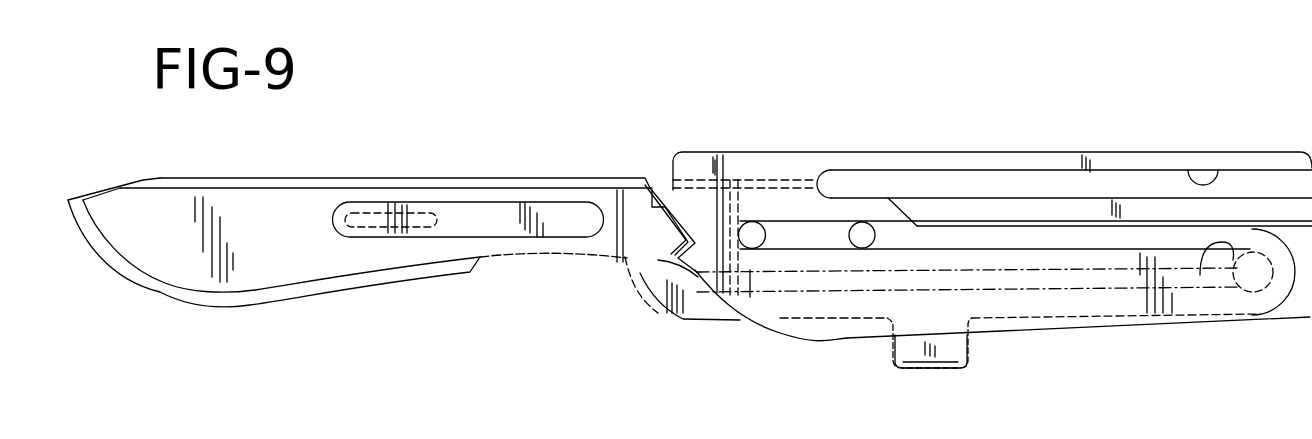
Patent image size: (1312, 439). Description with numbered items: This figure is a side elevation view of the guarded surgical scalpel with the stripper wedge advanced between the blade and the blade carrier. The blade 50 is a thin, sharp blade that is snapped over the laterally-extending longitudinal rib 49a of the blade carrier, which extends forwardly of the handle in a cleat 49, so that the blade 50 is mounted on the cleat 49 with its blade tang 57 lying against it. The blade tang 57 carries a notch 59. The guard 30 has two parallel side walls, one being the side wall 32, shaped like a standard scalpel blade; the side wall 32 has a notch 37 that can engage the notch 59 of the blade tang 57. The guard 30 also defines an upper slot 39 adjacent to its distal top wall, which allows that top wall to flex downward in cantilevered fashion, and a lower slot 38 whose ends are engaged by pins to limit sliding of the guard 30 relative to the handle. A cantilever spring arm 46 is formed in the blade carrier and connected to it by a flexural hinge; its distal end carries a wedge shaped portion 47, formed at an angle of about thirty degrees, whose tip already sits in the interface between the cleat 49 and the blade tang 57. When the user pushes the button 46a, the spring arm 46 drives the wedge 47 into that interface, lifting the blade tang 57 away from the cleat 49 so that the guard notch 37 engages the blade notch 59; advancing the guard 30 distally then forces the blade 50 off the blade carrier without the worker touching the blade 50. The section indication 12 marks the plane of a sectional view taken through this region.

The blade 50 is at (175, 217).
The cleat 49 is at (497, 227).
The laterally-extending longitudinal rib 49a is at (388, 223).
The blade tang 57 is at (550, 258).
The wedge shaped portion 47 is at (625, 263).
The notch 59 is at (670, 190).
The notch 37 is at (695, 273).
The section line 12- 12 is at (665, 368).
The guard 30 is at (965, 152).
The side wall 32 is at (828, 158).
The upper slot 39 is at (1187, 170).
The lower slot 38 is at (1200, 273).
The cantilever spring arm 46 is at (1113, 303).
The button 46a is at (928, 340).